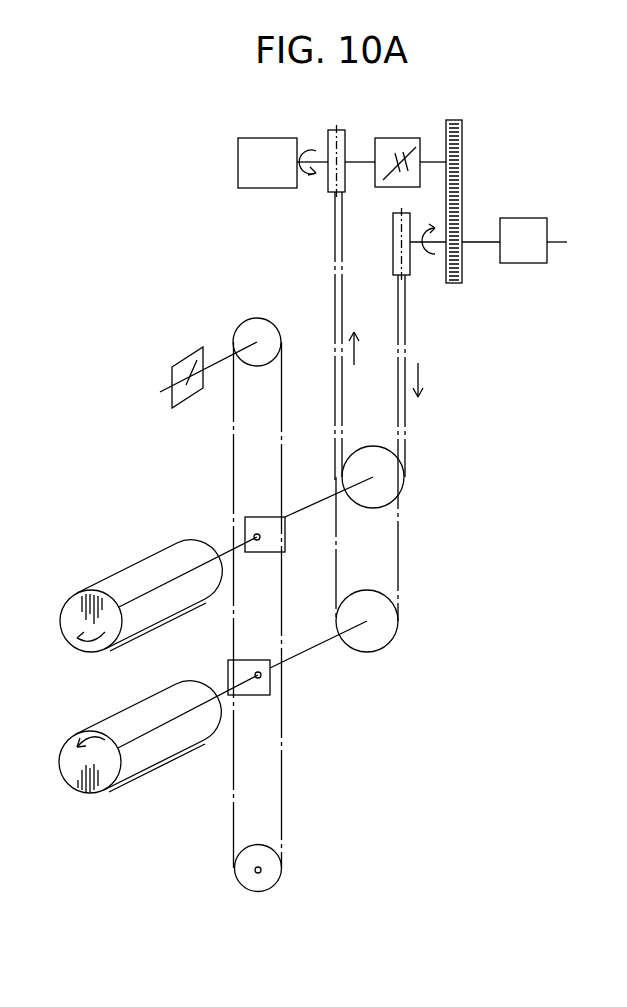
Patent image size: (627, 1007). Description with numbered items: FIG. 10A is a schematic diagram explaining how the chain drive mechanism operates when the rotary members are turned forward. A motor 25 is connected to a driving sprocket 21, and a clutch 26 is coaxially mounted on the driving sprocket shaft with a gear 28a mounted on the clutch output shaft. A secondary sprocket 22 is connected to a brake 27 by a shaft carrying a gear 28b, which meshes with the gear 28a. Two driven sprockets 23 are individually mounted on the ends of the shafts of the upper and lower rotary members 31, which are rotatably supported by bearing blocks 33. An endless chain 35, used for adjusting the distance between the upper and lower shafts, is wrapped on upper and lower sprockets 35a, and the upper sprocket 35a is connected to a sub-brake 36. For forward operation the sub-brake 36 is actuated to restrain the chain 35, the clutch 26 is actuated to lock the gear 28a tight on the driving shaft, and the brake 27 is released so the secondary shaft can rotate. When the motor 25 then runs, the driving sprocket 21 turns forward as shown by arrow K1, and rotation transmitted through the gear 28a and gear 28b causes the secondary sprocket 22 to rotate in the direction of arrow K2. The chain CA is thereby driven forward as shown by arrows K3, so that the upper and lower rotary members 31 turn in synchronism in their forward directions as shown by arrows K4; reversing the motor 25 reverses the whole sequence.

The motor 25 is at (238, 164).
The driving sprocket 21 is at (341, 150).
The clutch 26 is at (400, 138).
The gear 28a is at (462, 142).
The gear 28b is at (462, 266).
The brake 27 is at (520, 218).
The secondary sprocket 22 is at (407, 262).
The driven sprockets 23 is at (372, 460).
The chain CA is at (398, 513).
The sub-brake 36 is at (190, 355).
The sprockets 35a is at (267, 332).
The endless chain 35 is at (233, 452).
The bearing blocks 33 is at (265, 520).
The rotary members 31 is at (148, 565).
The arrow K1 is at (312, 181).
The arrow K2 is at (428, 224).
The arrows K3 is at (393, 369).
The arrows K4 is at (82, 692).